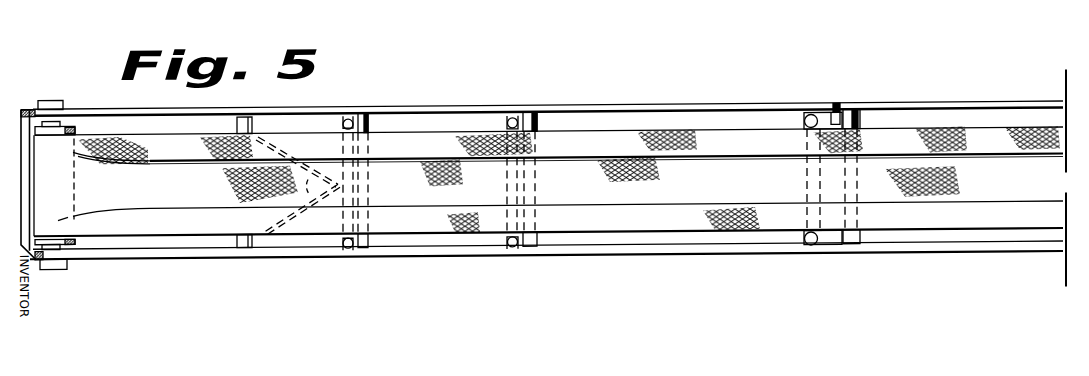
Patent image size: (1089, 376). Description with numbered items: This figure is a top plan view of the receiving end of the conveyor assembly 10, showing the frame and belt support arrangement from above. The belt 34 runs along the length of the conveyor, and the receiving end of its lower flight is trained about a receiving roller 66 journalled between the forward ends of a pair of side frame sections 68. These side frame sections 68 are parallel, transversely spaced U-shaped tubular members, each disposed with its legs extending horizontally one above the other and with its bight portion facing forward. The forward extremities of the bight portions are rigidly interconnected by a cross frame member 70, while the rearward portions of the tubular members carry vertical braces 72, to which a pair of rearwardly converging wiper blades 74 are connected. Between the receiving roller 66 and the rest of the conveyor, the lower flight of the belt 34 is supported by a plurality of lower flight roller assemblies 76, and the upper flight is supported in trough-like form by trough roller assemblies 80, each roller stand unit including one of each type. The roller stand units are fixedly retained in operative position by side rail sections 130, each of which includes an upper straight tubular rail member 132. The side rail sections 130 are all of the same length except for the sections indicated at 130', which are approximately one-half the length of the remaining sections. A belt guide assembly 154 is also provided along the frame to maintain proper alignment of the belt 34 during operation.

The conveyor assembly 10 is at (663, 79).
The belt 34 is at (767, 120).
The receiving roller 66 is at (74, 139).
The side frame sections 68 is at (144, 110).
The cross frame member 70 is at (22, 124).
The vertical braces 72 is at (247, 121).
The wiper blades 74 is at (296, 146).
The lower flight roller assemblies 76 is at (368, 121).
The trough roller assemblies 80 is at (352, 123).
The side rail sections 130 is at (549, 81).
The side rail sections 130' is at (548, 180).
The upper straight tubular rail member 132 is at (713, 253).
The belt guide assembly 154 is at (824, 105).